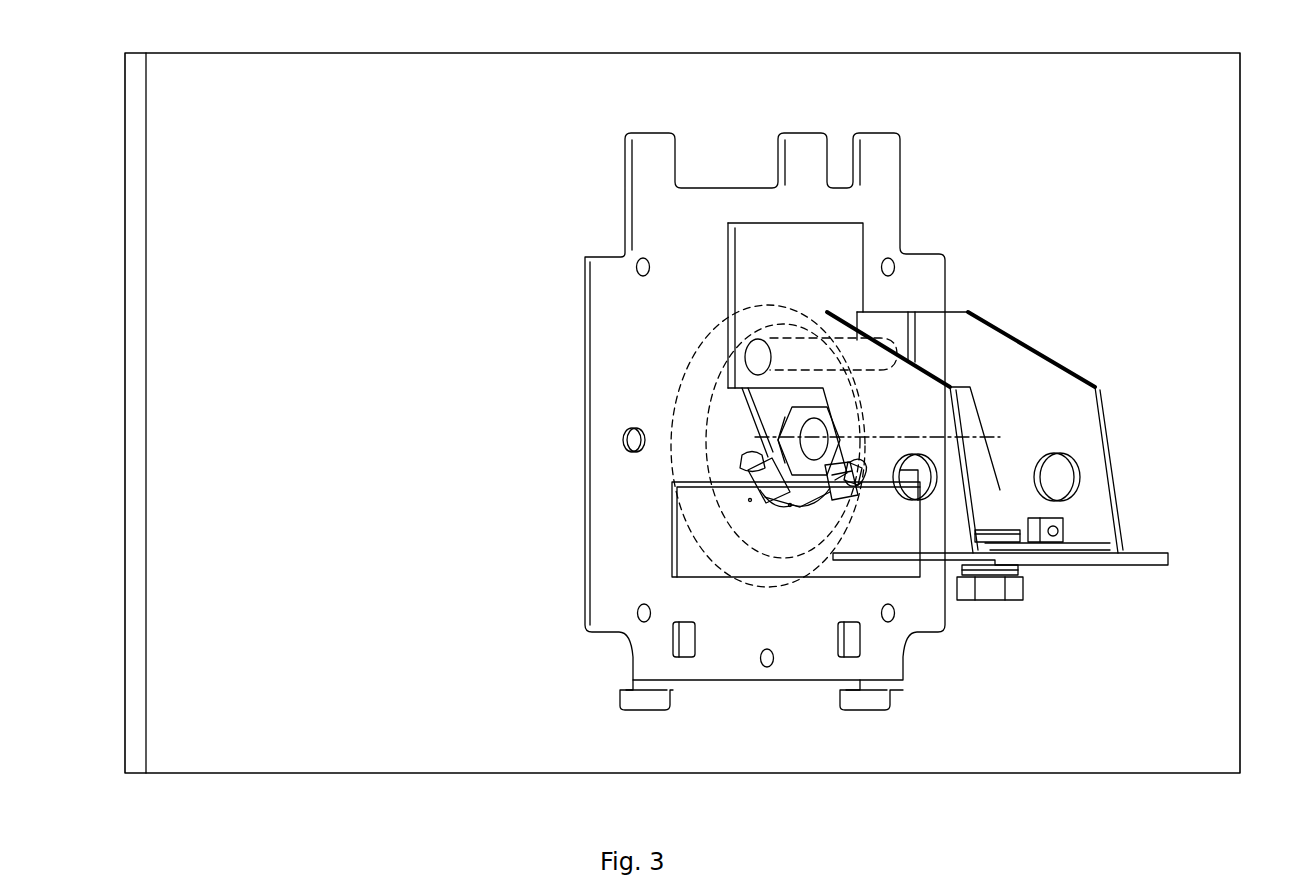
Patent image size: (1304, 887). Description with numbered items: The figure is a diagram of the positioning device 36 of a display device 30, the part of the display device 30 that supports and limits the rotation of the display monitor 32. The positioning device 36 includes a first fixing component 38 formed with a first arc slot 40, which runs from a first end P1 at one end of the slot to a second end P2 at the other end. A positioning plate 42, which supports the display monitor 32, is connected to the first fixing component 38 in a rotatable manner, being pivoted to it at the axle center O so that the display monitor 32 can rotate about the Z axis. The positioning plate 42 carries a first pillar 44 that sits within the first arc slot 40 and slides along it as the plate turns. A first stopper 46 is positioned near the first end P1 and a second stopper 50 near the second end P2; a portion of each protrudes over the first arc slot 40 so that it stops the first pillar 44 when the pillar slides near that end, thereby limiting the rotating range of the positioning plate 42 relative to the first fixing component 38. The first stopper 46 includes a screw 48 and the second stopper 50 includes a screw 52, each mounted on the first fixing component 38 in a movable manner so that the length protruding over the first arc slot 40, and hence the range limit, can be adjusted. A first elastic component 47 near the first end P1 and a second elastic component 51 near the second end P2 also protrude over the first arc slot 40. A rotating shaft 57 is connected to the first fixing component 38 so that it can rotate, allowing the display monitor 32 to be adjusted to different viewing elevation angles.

The display device 30 is at (82, 141).
The display monitor 32 is at (155, 592).
The positioning device 36 is at (978, 283).
The first fixing component 38 is at (767, 407).
The first arc slot 40 is at (841, 523).
The positioning plate 42 is at (885, 177).
The first pillar 44 is at (880, 562).
The first stopper 46 is at (870, 472).
The first elastic component 47 is at (850, 512).
The screw 48 is at (878, 472).
The second stopper 50 is at (749, 494).
The second elastic component 51 is at (776, 512).
The screw 52 is at (748, 473).
The rotating shaft 57 is at (888, 340).
The axle center O is at (891, 438).
The first end P1 is at (790, 505).
The second end P2 is at (750, 500).